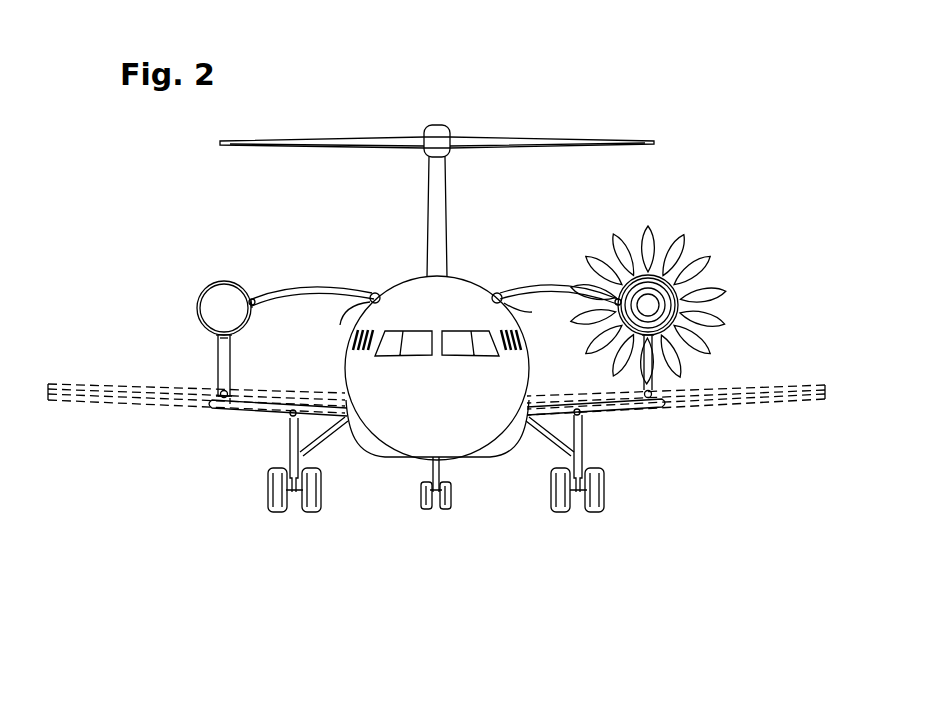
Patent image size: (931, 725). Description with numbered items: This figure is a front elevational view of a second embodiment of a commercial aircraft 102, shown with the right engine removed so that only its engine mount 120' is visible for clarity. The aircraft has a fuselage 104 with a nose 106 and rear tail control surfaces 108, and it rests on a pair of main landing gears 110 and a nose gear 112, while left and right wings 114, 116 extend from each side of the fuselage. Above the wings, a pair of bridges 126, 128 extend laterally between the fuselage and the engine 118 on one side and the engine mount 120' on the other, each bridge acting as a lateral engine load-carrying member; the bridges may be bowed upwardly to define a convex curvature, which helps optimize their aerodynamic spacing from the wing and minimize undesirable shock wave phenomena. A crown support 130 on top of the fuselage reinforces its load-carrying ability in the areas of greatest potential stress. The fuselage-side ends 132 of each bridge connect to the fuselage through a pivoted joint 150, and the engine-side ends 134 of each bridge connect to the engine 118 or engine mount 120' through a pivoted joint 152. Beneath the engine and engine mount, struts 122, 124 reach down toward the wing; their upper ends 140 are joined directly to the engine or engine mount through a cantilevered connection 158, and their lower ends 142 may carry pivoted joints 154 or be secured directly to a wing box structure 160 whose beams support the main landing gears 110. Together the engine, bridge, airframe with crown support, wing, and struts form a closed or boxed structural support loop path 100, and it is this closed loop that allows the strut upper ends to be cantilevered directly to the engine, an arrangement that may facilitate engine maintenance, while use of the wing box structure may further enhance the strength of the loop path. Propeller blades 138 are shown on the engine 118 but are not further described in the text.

The structural support loop path 100 is at (535, 387).
The commercial aircraft 102 is at (758, 166).
The fuselage 104 is at (358, 376).
The nose 106 is at (422, 439).
The tail control surfaces 108 is at (533, 138).
The main landing gear 110 is at (314, 513).
The nose gear 112 is at (448, 512).
The left wing 114 is at (786, 392).
The right wing 116 is at (90, 383).
The engine 118 is at (664, 295).
The engine mount 120' is at (213, 291).
The strut 122 is at (655, 391).
The strut 124 is at (216, 358).
The bridge 126 is at (530, 288).
The bridge 128 is at (288, 287).
The crown support 130 is at (450, 277).
The bridge ends 132 is at (369, 293).
The bridge ends 134 is at (262, 296).
The propeller blade 138 is at (705, 270).
The strut upper ends 140 is at (216, 346).
The strut lower ends 142 is at (229, 391).
The pivoted joint 150 is at (438, 322).
The pivoted joint 152 is at (253, 310).
The pivoted joint 154 is at (225, 413).
The cantilevered connection 158 is at (229, 338).
The wing box structure 160 is at (270, 416).